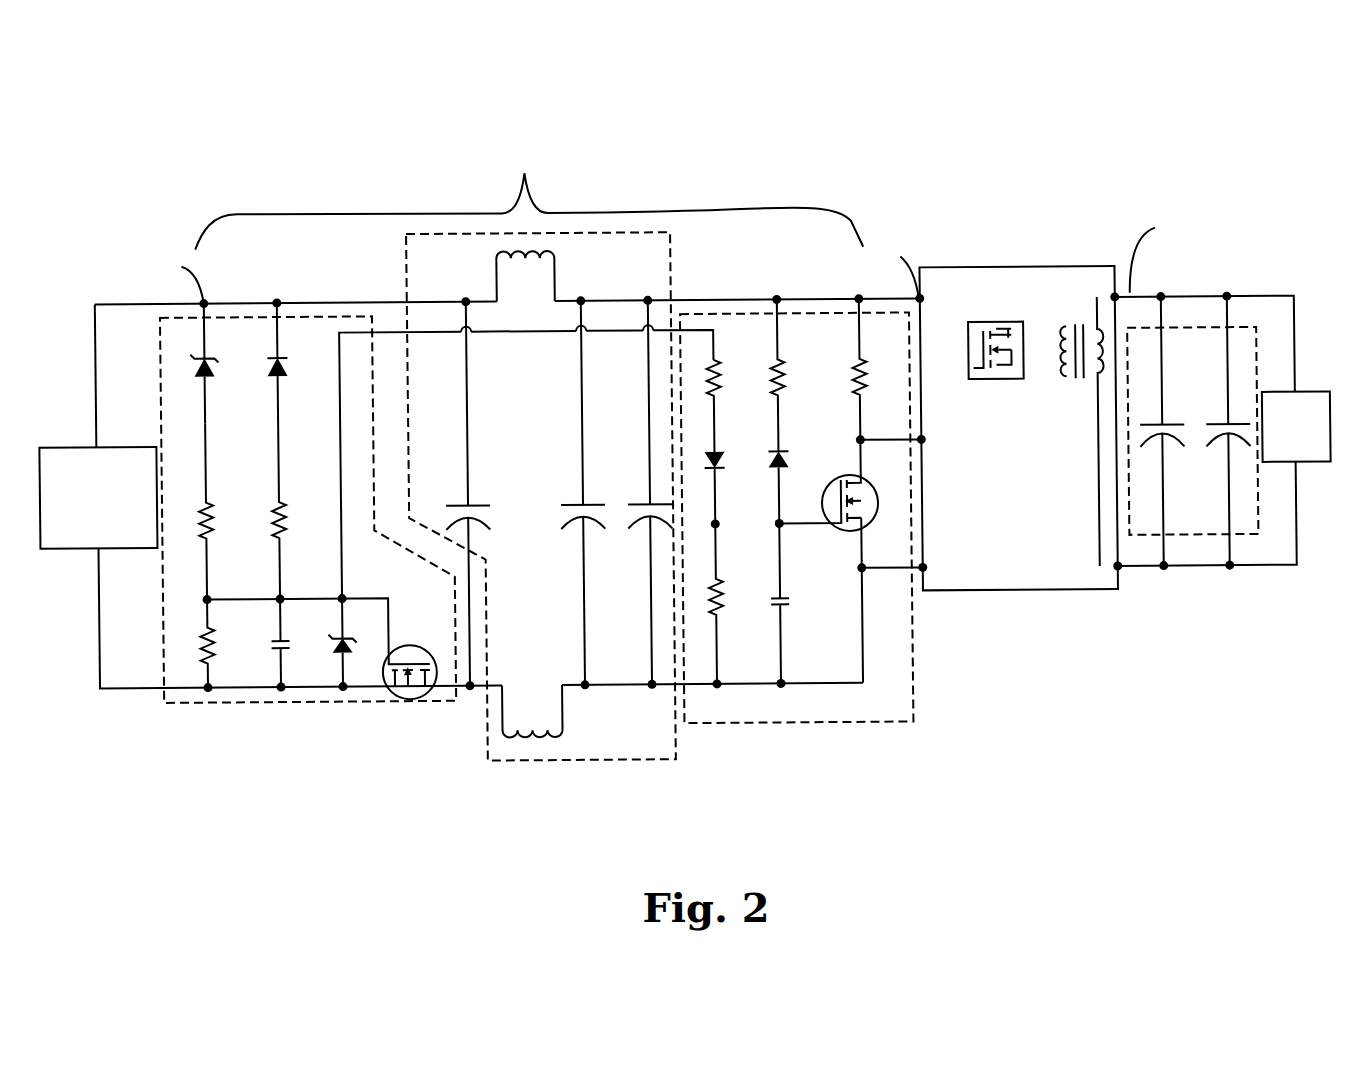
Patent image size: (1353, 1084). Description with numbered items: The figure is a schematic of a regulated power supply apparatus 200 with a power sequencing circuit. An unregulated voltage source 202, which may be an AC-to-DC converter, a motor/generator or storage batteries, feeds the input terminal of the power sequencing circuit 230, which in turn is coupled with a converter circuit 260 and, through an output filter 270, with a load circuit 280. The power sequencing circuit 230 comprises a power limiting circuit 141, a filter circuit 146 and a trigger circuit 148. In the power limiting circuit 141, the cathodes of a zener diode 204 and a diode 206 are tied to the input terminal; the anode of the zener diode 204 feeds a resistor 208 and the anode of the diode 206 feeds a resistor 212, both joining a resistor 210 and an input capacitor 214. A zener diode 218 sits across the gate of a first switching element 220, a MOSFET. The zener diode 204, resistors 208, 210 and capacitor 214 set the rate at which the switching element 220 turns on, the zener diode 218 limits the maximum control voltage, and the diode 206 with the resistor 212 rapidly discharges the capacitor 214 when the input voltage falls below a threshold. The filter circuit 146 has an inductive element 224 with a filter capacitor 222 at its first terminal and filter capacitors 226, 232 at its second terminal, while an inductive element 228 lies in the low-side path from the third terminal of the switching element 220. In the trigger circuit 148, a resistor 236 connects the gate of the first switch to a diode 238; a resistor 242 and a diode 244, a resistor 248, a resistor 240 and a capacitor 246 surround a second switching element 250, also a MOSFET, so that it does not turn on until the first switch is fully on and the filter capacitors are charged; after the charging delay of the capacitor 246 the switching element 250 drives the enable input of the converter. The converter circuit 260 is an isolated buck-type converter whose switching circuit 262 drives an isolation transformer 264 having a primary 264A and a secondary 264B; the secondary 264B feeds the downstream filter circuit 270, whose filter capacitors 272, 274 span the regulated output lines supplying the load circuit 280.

The regulated power supply apparatus 200 is at (1224, 122).
The unregulated voltage source 202 is at (71, 546).
The semiconductor diode 204 is at (197, 379).
The semiconductor diode 206 is at (267, 381).
The resistor 208 is at (197, 530).
The resistor 210 is at (201, 658).
The resistor 212 is at (257, 536).
The input capacitor 214 is at (272, 658).
The semiconductor diode 218 is at (335, 658).
The first switching element 220 is at (408, 695).
The filter capacitor 222 is at (482, 492).
The inductive element 224 is at (499, 260).
The filter capacitor 226 is at (571, 530).
The inductive element 228 is at (560, 724).
The power sequencing circuit 230 is at (528, 198).
The filter capacitor 232 is at (638, 530).
The resistor 236 is at (700, 342).
The semiconductor diode 238 is at (693, 463).
The resistor 240 is at (704, 615).
The resistor 242 is at (768, 360).
The semiconductor diode 244 is at (794, 448).
The capacitor 246 is at (770, 613).
The resistor 248 is at (853, 361).
The second switching element 250 is at (871, 524).
The converter circuit 260 is at (1006, 267).
The switching circuit 262 is at (1011, 324).
The isolation transformer 264 is at (1083, 383).
The primary 264A is at (1064, 383).
The secondary 264B is at (1100, 283).
The downstream filter circuit 270 is at (1209, 539).
The filter capacitor 272 is at (1175, 451).
The filter capacitor 274 is at (1220, 397).
The load circuit 280 is at (1287, 466).
The power limiting circuit 141 is at (355, 700).
The filter circuit 146 is at (512, 759).
The trigger circuit 148 is at (815, 724).